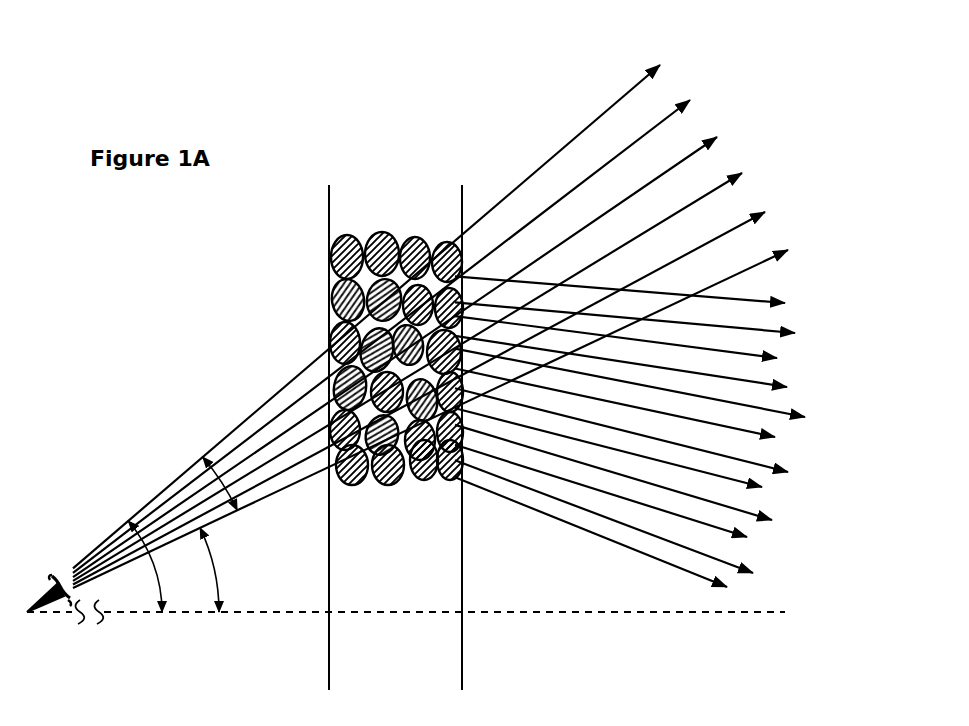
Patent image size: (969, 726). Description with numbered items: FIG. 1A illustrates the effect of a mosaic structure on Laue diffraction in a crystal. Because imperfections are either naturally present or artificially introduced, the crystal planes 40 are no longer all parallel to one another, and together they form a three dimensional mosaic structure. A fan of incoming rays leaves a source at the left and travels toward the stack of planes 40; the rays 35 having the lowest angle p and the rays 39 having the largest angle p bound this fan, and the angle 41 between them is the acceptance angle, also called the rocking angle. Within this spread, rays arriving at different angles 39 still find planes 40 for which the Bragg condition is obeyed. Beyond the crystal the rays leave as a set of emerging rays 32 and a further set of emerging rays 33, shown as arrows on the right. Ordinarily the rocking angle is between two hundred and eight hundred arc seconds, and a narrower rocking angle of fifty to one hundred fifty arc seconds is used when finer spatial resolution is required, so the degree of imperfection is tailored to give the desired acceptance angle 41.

The transmitted light rays 32 is at (520, 185).
The scattered light rays 33 is at (552, 474).
The rays having the lowest angle 35 is at (217, 588).
The rays coming at different angles 39 is at (157, 573).
The crystal planes 40 is at (410, 234).
The acceptance angle 41 is at (225, 486).